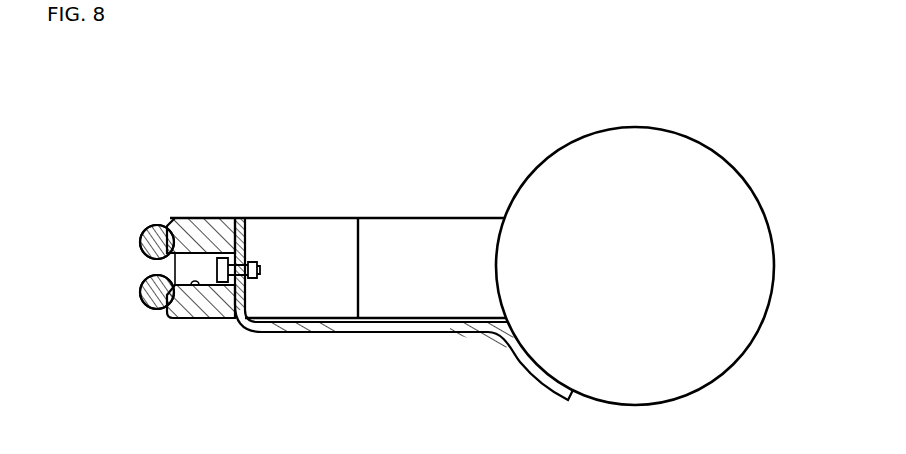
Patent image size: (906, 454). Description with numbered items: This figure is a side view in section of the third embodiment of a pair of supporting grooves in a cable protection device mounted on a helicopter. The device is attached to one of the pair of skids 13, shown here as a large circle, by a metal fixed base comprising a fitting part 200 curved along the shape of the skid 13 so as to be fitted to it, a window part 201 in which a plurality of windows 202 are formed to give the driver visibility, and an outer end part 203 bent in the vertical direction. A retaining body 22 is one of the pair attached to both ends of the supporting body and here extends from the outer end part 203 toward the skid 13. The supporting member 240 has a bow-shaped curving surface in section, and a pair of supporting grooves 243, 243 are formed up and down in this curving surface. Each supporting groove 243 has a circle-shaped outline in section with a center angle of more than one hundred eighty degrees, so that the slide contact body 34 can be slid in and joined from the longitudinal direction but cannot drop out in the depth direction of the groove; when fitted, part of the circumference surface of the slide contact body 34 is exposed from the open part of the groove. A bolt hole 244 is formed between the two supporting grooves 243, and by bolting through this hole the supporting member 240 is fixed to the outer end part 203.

The skid 13 is at (652, 124).
The retaining body 22 is at (414, 217).
The slide contact body 34 is at (141, 242).
The fitting part 200 is at (404, 295).
The window part 201 is at (287, 333).
The window 202 is at (440, 333).
The outer end part 203 is at (246, 250).
The supporting member 240 is at (198, 217).
The supporting groove 243 is at (146, 226).
The bolt hole 244 is at (198, 319).